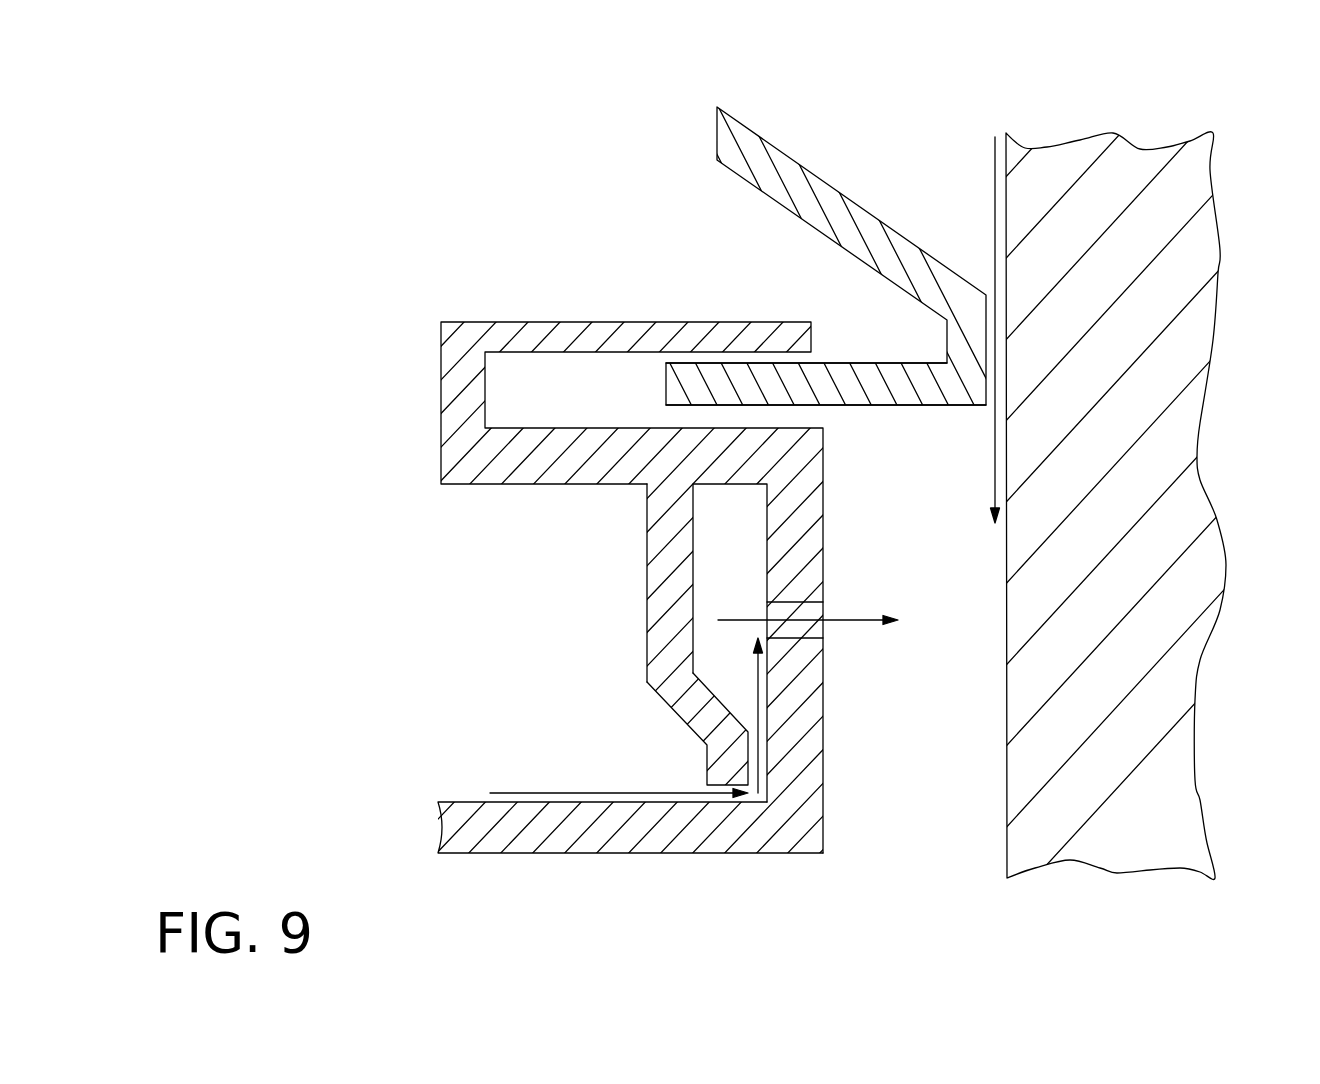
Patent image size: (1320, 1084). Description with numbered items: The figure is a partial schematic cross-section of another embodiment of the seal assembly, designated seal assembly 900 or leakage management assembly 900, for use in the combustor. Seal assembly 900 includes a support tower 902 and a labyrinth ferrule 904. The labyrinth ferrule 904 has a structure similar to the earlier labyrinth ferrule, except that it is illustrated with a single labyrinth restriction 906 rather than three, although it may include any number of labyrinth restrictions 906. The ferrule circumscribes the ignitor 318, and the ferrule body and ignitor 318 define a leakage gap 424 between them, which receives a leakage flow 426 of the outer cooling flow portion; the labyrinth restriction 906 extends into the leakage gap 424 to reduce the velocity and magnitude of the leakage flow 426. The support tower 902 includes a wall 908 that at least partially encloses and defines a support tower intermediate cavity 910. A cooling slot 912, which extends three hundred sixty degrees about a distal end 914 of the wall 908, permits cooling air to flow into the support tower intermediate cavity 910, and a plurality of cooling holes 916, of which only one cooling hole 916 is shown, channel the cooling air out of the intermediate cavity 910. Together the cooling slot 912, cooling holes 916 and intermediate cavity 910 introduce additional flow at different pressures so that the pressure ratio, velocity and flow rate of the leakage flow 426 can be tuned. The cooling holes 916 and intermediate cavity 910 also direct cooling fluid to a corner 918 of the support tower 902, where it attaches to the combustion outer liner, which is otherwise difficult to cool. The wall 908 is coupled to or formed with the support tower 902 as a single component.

The seal assembly 900 is at (687, 117).
The support tower 902 is at (807, 502).
The labyrinth ferrule 904 is at (810, 223).
The labyrinth restriction 906 is at (985, 357).
The wall 908 is at (653, 590).
The support tower intermediate cavity 910 is at (752, 610).
The cooling slot 912 is at (698, 787).
The distal end 914 is at (705, 760).
The cooling hole 916 is at (828, 609).
The corner 918 is at (783, 833).
The leakage gap 424 is at (924, 150).
The leakage flow 426 is at (995, 453).
The ignitor 318 is at (1137, 157).